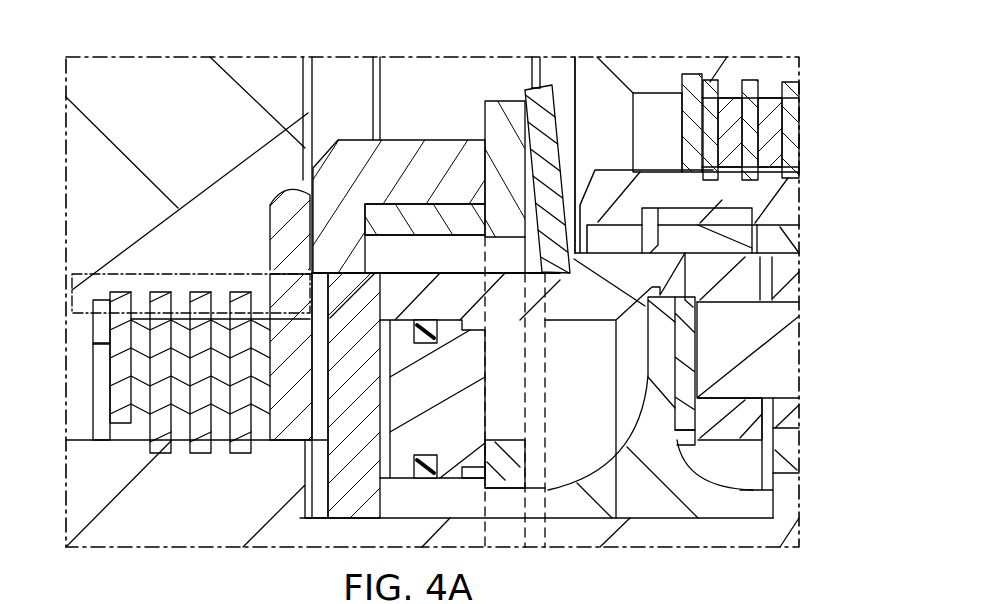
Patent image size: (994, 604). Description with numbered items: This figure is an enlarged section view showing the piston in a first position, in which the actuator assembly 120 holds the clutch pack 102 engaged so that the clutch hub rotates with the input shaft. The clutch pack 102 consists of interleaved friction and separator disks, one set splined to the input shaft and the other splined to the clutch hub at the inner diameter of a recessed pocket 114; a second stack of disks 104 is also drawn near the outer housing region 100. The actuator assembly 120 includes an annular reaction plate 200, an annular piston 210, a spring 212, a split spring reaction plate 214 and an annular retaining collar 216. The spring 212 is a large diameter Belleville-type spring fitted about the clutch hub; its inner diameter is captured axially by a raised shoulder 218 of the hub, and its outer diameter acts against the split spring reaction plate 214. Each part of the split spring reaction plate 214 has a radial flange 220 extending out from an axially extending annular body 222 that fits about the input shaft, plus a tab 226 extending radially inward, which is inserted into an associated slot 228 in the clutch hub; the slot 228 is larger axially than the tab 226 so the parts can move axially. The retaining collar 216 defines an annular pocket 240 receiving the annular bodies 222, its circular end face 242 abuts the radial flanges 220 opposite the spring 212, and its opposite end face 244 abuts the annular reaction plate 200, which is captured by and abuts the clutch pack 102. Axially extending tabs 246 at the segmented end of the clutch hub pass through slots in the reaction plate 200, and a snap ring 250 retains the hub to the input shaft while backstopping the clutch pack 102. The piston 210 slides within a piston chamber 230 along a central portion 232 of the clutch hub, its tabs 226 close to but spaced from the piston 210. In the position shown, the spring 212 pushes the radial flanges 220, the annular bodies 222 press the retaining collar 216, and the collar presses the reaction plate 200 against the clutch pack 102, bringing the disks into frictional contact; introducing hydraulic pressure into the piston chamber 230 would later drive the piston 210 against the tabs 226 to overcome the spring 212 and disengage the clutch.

The gas turbine engine section 100 is at (802, 301).
The clutch pack 102 is at (124, 290).
The second brush seal stack 104 is at (792, 134).
The recessed pocket 114 is at (80, 334).
The actuator assembly 120 is at (562, 82).
The annular reaction plate 200 is at (285, 215).
The annular piston 210 is at (468, 420).
The spring 212 is at (545, 125).
The split spring reaction plate 214 is at (512, 96).
The annular retaining collar 216 is at (362, 160).
The raised shoulder 218 is at (617, 265).
The radial flange 220 is at (504, 100).
The annular body 222 is at (438, 220).
The tab 226 is at (507, 440).
The slot 228 is at (505, 452).
The piston chamber 230 is at (380, 403).
The central portion 232 is at (365, 517).
The annular pocket 240 is at (427, 253).
The circular end face 242 is at (490, 148).
The opposite end face 244 is at (305, 180).
The axially extending tab 246 is at (178, 300).
The snap ring 250 is at (93, 344).